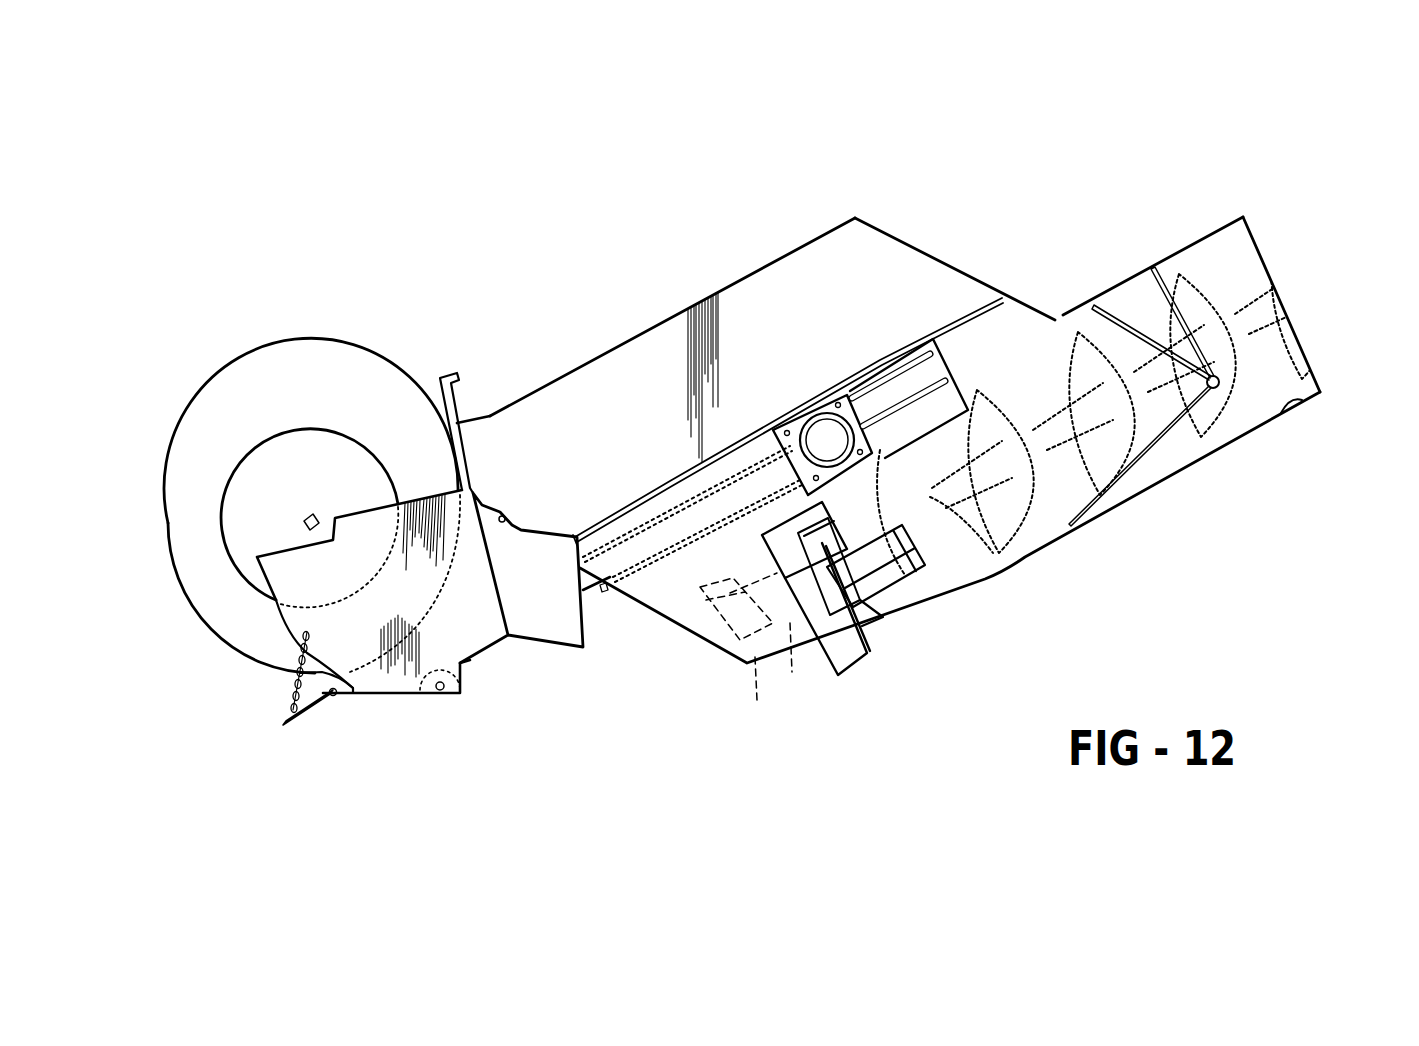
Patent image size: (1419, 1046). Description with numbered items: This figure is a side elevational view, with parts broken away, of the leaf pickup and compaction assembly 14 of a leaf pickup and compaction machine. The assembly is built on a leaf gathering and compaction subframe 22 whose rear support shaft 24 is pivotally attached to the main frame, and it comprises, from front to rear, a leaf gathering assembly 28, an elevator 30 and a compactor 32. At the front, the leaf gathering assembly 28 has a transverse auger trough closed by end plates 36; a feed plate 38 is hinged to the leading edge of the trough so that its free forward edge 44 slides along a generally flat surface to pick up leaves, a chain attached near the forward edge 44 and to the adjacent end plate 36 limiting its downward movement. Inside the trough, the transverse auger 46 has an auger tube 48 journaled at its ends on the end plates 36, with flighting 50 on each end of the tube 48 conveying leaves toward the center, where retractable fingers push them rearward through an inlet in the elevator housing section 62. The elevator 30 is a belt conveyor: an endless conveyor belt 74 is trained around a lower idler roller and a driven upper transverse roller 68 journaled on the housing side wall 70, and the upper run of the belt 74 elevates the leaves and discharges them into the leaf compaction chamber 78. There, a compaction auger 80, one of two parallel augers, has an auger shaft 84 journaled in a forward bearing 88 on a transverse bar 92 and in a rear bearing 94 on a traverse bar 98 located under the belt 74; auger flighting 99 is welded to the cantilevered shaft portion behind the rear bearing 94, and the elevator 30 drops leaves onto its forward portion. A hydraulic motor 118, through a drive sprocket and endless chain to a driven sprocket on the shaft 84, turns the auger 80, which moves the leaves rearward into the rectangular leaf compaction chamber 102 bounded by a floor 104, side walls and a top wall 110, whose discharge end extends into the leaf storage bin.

The leaf pickup and compaction assembly 14 is at (747, 275).
The leaf gathering and compaction subframe 22 is at (817, 235).
The rear support shaft 24 is at (1227, 387).
The leaf gathering assembly 28 is at (363, 312).
The elevator 30 is at (578, 330).
The compactor 32 is at (1033, 573).
The end plates 36 is at (410, 693).
The feed plate 38 is at (283, 723).
The free forward edge 44 is at (333, 697).
The transverse auger 46 is at (276, 372).
The auger tube 48 is at (358, 452).
The flighting 50 is at (223, 414).
The elevator housing section 62 is at (535, 382).
The driven upper transverse roller 68 is at (822, 432).
The side wall 70 is at (637, 358).
The endless conveyor belt 74 is at (605, 592).
The leaf compaction chamber 78 is at (1123, 278).
The compaction auger 80 is at (1117, 486).
The auger shaft 84 is at (792, 672).
The forward bearing 88 is at (757, 700).
The transverse bar 92 is at (717, 650).
The rear bearing 94 is at (840, 548).
The traverse bar 98 is at (878, 470).
The auger flighting 99 is at (1200, 463).
The rectangular leaf compaction chamber 102 is at (1080, 327).
The floor 104 is at (1307, 403).
The top wall 110 is at (1187, 245).
The hydraulic motor 118 is at (893, 585).